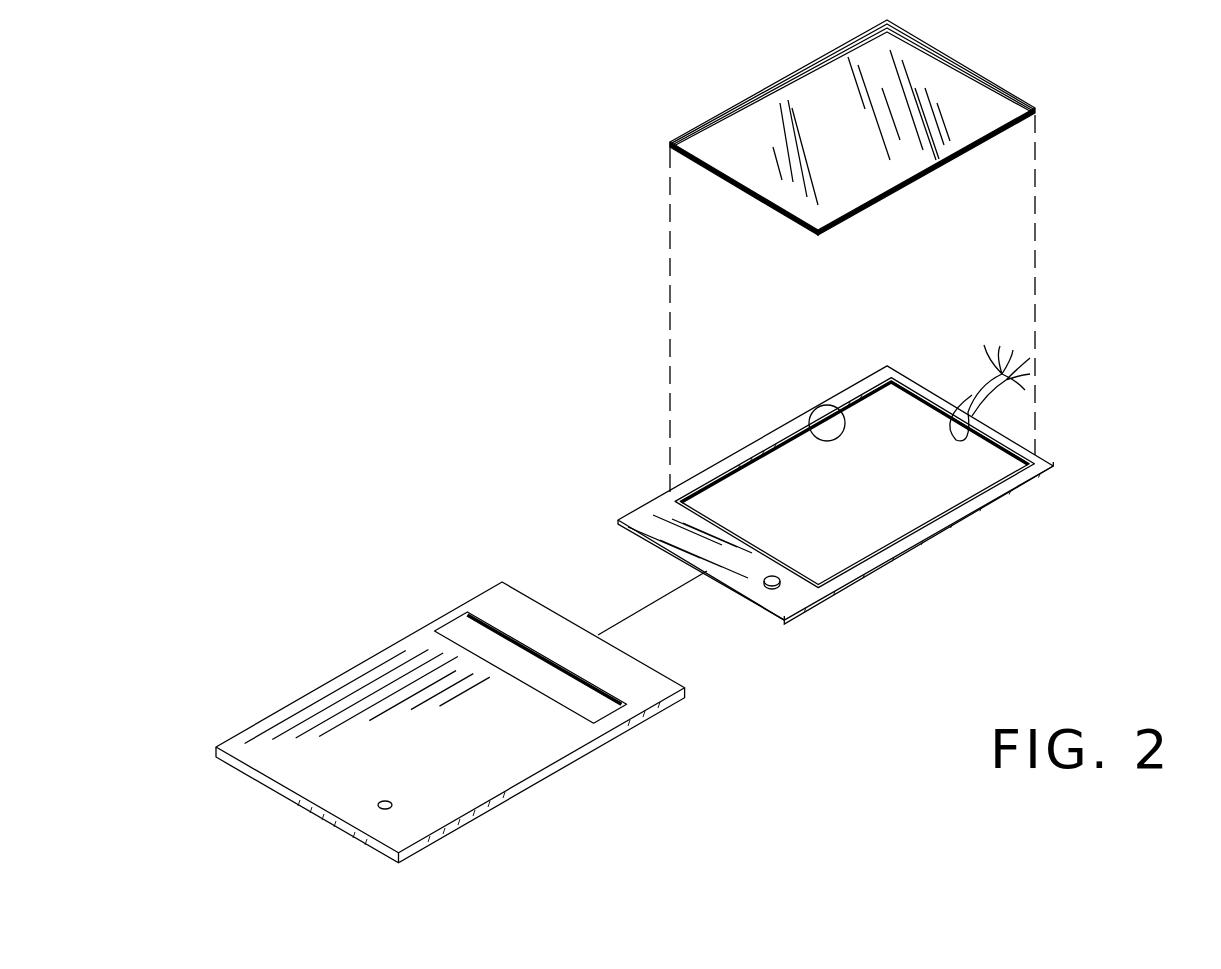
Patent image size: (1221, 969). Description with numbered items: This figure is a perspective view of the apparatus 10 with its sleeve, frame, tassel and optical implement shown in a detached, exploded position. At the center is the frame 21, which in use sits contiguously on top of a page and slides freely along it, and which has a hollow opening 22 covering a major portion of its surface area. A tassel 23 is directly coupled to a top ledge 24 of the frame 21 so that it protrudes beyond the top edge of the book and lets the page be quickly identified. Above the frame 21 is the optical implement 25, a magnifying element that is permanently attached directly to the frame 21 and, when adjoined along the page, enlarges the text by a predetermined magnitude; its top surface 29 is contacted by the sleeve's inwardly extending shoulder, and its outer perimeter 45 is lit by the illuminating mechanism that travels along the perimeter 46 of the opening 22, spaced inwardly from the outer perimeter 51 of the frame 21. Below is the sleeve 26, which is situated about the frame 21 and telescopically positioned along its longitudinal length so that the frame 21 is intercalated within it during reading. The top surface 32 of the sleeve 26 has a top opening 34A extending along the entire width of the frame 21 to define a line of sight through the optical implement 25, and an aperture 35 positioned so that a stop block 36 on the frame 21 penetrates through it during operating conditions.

The apparatus 10 is at (1158, 268).
The frame 21 is at (1055, 463).
The hollow opening 22 is at (968, 485).
The tassel 23 is at (1017, 346).
The top ledge 24 is at (1003, 428).
The optical implement 25 is at (740, 138).
The sleeve 26 is at (648, 685).
The top surface of the optical implement 29 is at (750, 155).
The top surface of the sleeve 32 is at (497, 734).
The top opening 34A is at (467, 635).
The aperture 35 is at (392, 803).
The stop block 36 is at (782, 583).
The perimeter of the optical implement 45 is at (930, 172).
The perimeter of the opening 46 is at (803, 427).
The outer perimeter of the frame 51 is at (923, 550).